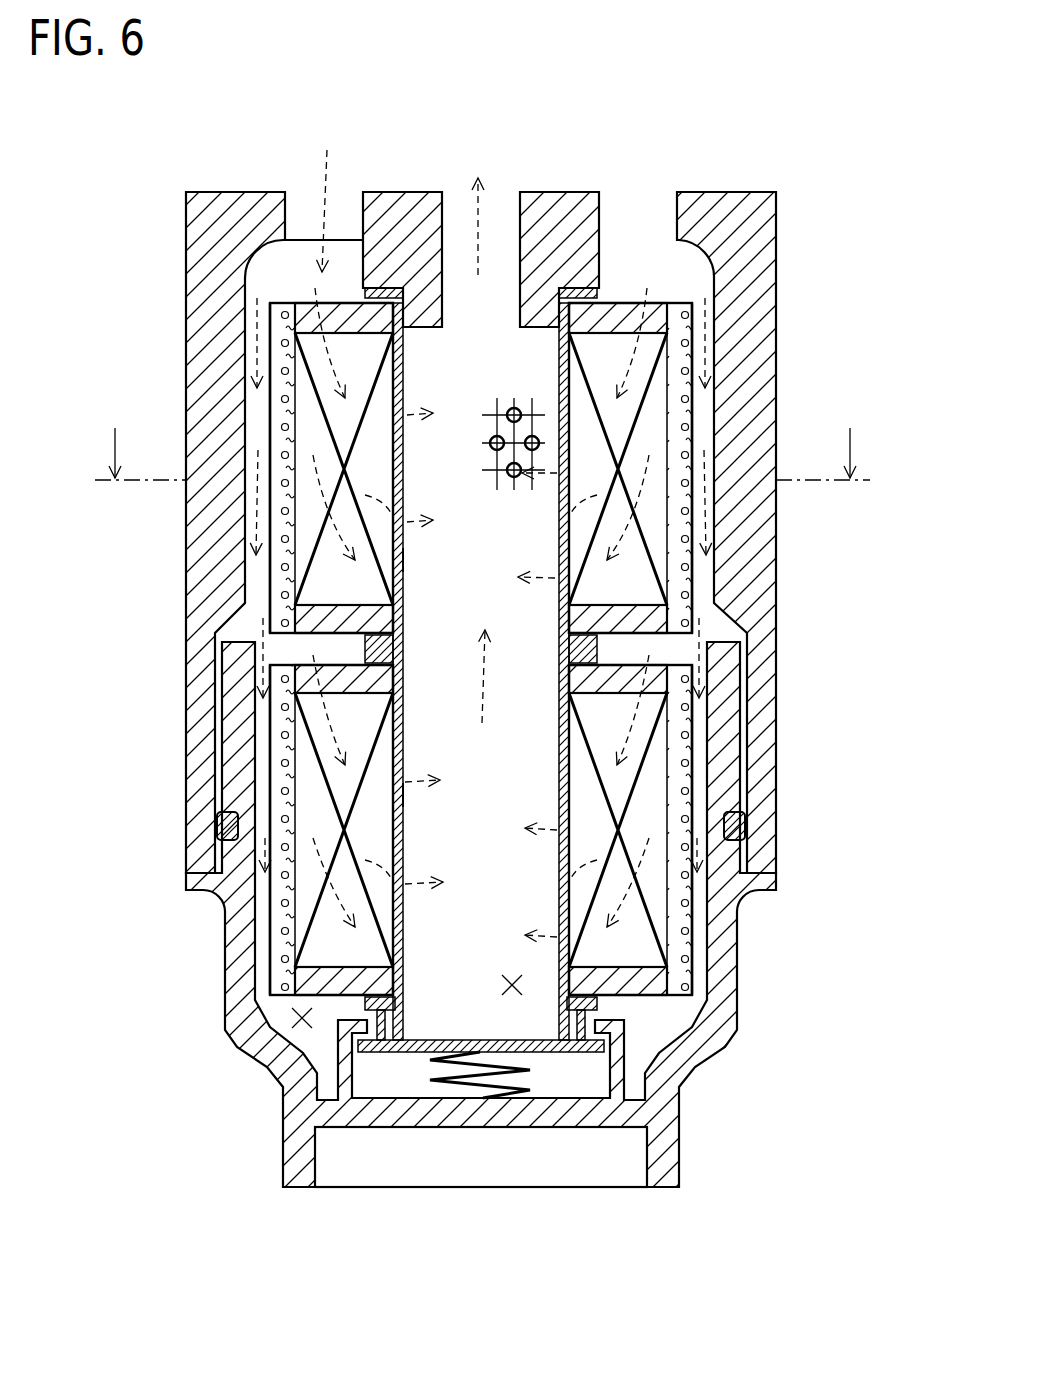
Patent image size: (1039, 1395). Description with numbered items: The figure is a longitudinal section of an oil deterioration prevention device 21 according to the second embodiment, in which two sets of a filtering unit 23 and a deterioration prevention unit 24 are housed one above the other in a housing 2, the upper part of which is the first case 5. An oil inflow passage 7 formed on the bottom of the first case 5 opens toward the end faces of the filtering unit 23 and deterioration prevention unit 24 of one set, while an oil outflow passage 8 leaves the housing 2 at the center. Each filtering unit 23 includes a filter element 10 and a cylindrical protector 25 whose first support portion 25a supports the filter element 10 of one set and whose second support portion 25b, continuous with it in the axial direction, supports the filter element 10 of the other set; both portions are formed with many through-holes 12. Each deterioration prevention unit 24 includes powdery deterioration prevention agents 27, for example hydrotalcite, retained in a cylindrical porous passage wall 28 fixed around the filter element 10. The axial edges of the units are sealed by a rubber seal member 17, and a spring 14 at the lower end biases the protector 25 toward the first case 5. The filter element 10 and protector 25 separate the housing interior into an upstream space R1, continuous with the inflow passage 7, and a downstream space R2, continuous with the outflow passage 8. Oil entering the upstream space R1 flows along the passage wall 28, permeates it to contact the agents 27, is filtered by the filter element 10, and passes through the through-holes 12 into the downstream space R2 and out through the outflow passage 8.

The oil deterioration prevention device 21 is at (742, 150).
The housing 2 is at (781, 262).
The first case 5 is at (186, 258).
The oil inflow passage 7 is at (300, 192).
The oil outflow passage 8 is at (500, 192).
The filter element 10 is at (650, 412).
The through-holes 12 is at (403, 360).
The spring 14 is at (450, 1058).
The rubber seal member 17 is at (385, 192).
The filtering unit 23 is at (625, 577).
The deterioration prevention unit 24 is at (260, 582).
The protector 25 is at (395, 1048).
The first support portion 25a is at (405, 795).
The second support portion 25b is at (405, 560).
The deterioration prevention agents 27 is at (290, 522).
The passage wall 28 is at (280, 612).
The upstream space R1 is at (302, 1020).
The downstream space R2 is at (512, 990).